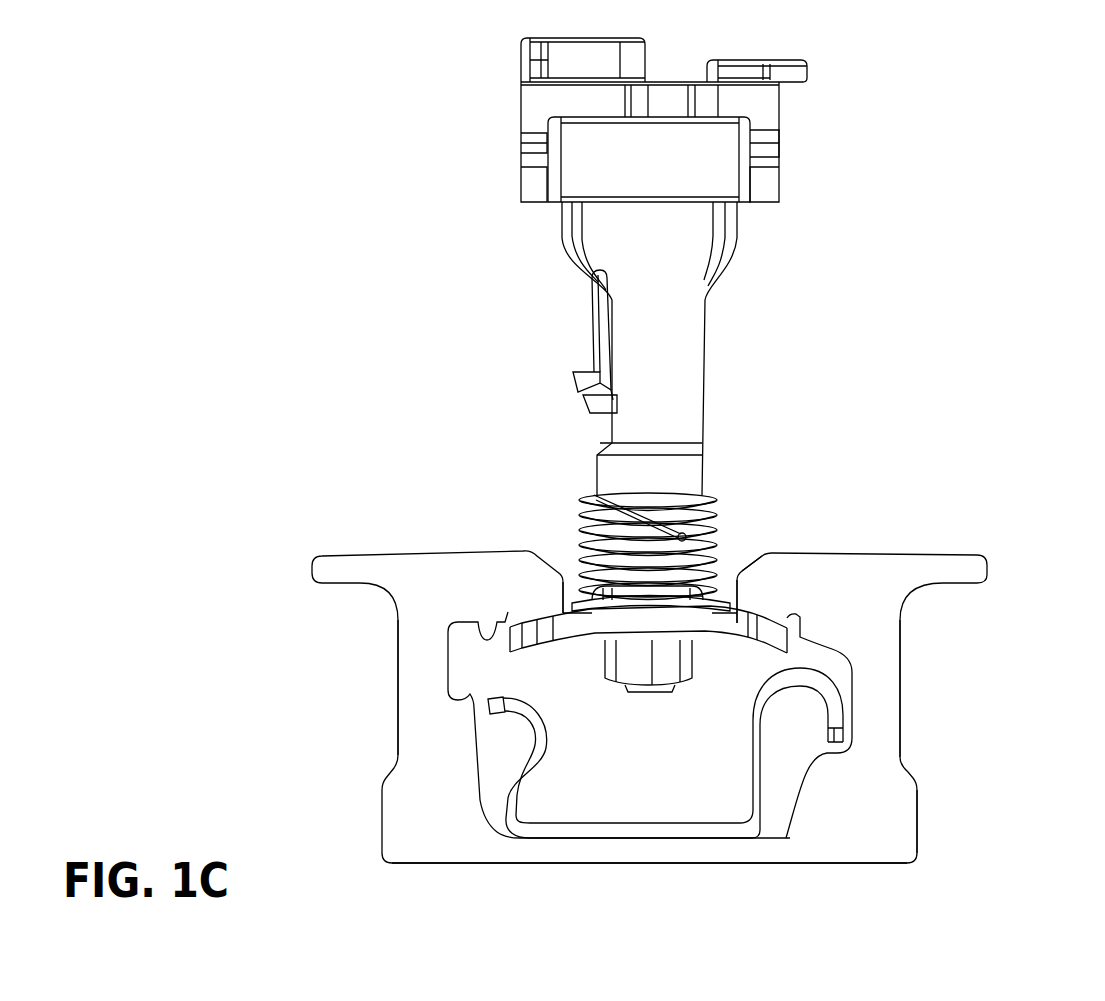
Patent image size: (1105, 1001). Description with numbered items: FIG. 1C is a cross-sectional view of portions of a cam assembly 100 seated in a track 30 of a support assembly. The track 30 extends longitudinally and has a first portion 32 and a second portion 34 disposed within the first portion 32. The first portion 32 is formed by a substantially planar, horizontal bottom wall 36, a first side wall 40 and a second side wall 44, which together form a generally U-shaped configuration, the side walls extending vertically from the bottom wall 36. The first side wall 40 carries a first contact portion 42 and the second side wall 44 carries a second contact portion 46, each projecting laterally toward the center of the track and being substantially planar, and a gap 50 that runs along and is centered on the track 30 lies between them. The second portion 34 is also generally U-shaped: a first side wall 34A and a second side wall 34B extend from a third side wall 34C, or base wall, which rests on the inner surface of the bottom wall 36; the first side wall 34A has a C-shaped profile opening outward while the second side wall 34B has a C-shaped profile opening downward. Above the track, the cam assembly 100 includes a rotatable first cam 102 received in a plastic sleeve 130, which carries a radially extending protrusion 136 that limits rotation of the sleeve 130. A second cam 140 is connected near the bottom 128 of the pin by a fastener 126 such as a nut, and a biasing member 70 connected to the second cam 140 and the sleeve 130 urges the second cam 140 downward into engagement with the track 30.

The cam assembly 100 is at (468, 105).
The first cam 102 is at (763, 107).
The sleeve 130 is at (680, 335).
The protrusion 136 is at (575, 382).
The biasing member 70 is at (718, 503).
The gap 50 is at (715, 600).
The second cam 140 is at (587, 670).
The fastener 126 is at (680, 668).
The bottom of the pin 128 is at (667, 708).
The track 30 is at (998, 581).
The first contact portion 42 is at (518, 592).
The second contact portion 46 is at (760, 597).
The first side wall 40 is at (418, 716).
The second side wall 44 is at (870, 667).
The first portion of the track 32 is at (930, 845).
The bottom wall 36 is at (648, 850).
The second portion of the track 34 is at (550, 703).
The first side wall 34A is at (510, 792).
The second side wall 34B is at (760, 757).
The third side wall 34C is at (610, 828).